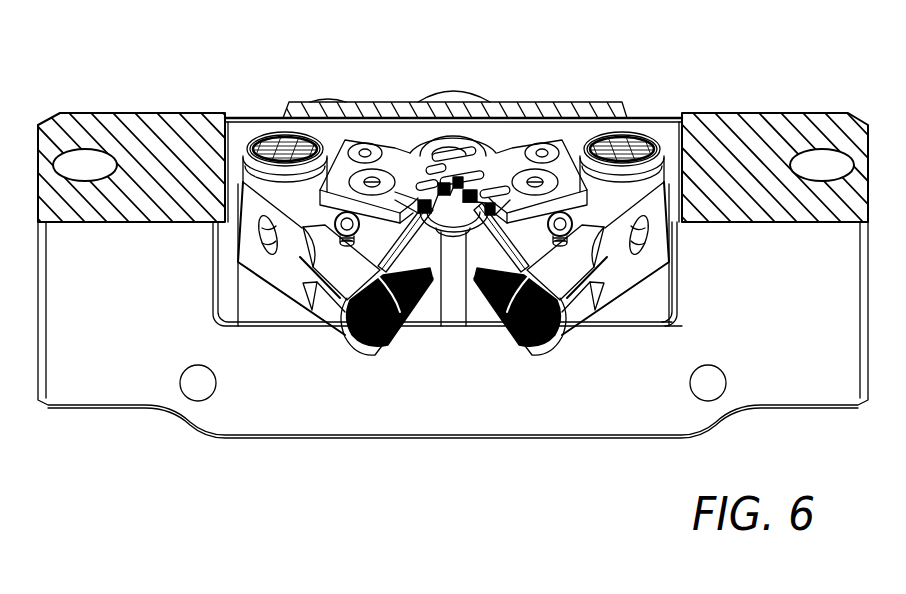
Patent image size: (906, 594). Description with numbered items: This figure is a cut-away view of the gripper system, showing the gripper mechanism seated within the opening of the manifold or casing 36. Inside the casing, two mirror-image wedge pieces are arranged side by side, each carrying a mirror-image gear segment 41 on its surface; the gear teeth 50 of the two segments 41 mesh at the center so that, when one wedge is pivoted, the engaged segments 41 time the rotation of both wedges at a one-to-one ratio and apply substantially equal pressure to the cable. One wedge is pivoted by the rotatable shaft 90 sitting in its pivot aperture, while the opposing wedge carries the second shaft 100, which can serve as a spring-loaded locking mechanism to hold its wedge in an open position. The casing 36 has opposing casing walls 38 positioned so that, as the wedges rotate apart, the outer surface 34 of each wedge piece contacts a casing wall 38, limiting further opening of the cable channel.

The outer surface 34 is at (315, 285).
The casing 36 is at (853, 293).
The casing wall 38 is at (685, 222).
The gear segment 41 is at (398, 165).
The gear teeth 50 is at (452, 158).
The rotatable shaft 90 is at (283, 156).
The second shaft 100 is at (622, 140).